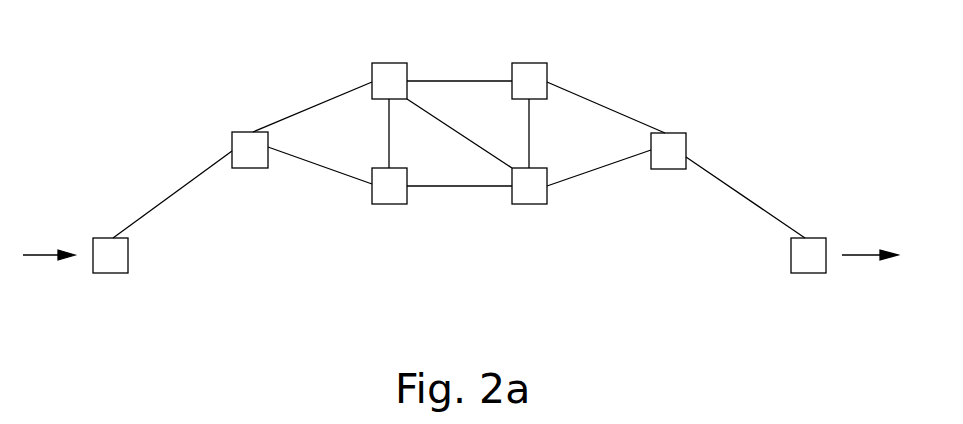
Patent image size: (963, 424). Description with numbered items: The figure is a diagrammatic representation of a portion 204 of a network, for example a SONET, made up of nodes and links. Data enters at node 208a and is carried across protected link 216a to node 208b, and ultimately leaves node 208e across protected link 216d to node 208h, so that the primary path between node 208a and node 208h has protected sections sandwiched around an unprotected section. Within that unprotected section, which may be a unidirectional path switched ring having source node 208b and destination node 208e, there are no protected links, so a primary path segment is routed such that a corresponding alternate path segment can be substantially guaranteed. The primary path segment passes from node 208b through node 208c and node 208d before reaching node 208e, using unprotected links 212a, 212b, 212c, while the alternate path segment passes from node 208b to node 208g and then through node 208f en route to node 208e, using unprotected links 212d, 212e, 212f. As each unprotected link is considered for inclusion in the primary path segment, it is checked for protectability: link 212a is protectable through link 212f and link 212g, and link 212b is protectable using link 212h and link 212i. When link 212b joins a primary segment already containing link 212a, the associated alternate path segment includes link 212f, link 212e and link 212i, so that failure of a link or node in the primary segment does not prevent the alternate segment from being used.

The portion of a network 204 is at (168, 26).
The node 208a is at (128, 255).
The node 208b is at (248, 168).
The node 208c is at (388, 63).
The node 208d is at (547, 70).
The node 208e is at (686, 148).
The node 208f is at (529, 204).
The node 208g is at (388, 204).
The node 208h is at (807, 273).
The unprotected link 212a is at (335, 93).
The unprotected link 212b is at (477, 80).
The unprotected link 212c is at (633, 118).
The unprotected link 212d is at (593, 172).
The unprotected link 212e is at (440, 187).
The unprotected link 212f is at (273, 151).
The unprotected link 212g is at (389, 148).
The unprotected link 212h is at (455, 130).
The unprotected link 212i is at (530, 148).
The protected link 216a is at (170, 196).
The protected link 216d is at (788, 224).